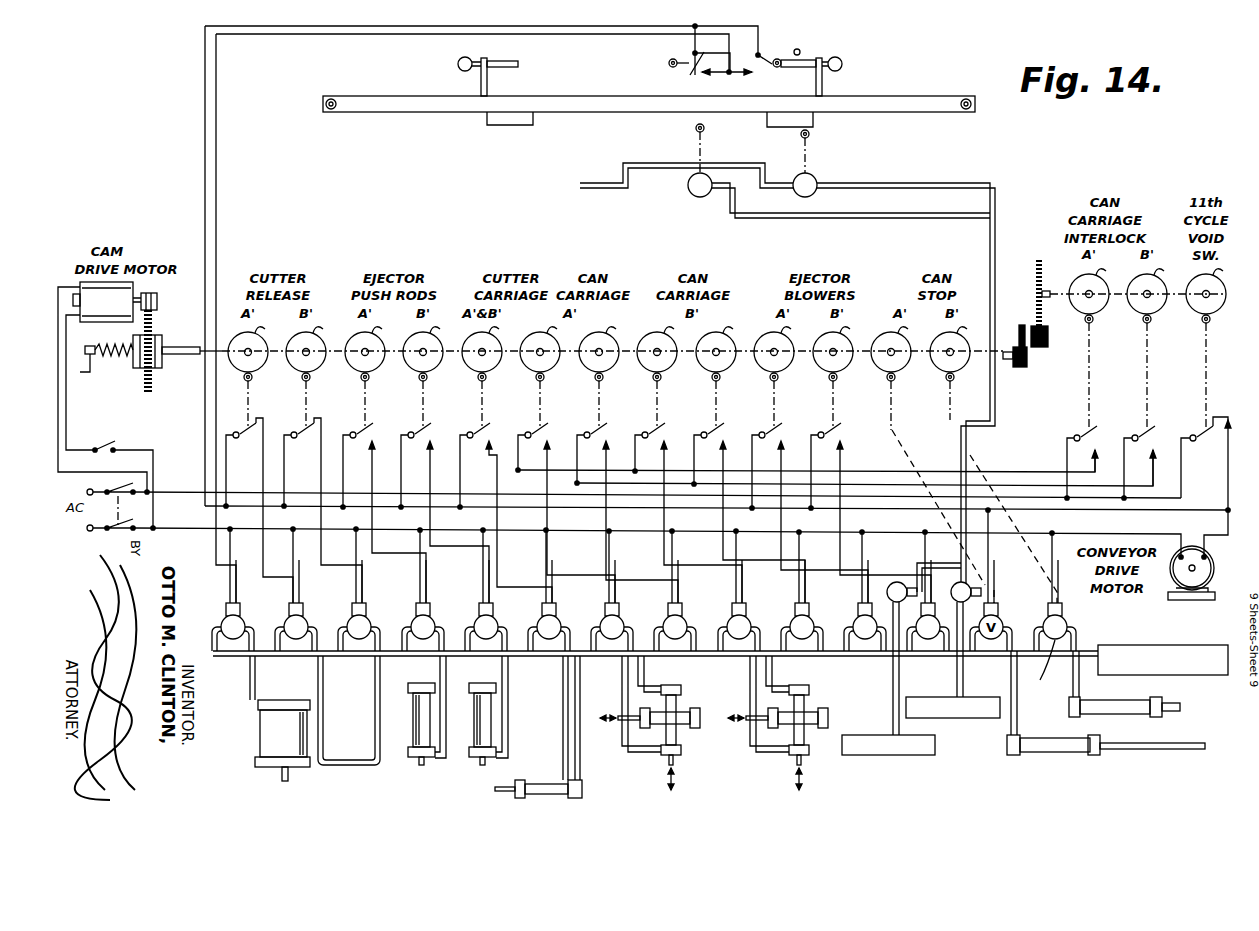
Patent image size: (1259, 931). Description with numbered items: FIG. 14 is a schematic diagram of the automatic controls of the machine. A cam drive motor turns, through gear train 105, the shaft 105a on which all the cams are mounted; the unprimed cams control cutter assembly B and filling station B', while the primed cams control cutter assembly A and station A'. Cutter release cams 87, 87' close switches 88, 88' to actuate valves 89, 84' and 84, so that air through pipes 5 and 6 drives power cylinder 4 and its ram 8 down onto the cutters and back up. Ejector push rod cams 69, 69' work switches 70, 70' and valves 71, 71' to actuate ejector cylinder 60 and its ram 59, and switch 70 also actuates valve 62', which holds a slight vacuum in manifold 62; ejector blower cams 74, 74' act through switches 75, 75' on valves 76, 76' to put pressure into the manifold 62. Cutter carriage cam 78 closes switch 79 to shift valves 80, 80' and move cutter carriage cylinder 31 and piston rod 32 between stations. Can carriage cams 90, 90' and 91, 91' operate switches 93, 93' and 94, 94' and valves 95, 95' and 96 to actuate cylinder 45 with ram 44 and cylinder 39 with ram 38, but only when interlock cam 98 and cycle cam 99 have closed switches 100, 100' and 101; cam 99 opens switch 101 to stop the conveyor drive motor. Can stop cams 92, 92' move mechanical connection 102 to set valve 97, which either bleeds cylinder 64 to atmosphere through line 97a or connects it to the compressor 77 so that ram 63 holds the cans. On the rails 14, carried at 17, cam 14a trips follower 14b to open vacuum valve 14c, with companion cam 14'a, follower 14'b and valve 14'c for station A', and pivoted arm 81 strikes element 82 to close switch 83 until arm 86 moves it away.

The power cylinder 4 is at (257, 730).
The pipe 5 is at (256, 681).
The pipe 6 is at (312, 770).
The ram 8 is at (282, 778).
The rail 14 is at (649, 88).
The cam 14a is at (813, 122).
The bracket 14'a is at (510, 134).
The cam follower 14b is at (800, 137).
The pivot 14'b is at (668, 149).
The valve 14c is at (810, 177).
The valve 14'c is at (689, 203).
The pivot 17 is at (968, 99).
The cutter carriage cylinder 31 is at (552, 772).
The piston rod 32 is at (495, 789).
The ram 38 is at (785, 707).
The cylinder 39 is at (828, 742).
The ram 44 is at (825, 775).
The cylinder 45 is at (768, 781).
The ram 59 is at (460, 792).
The power cylinder 60 is at (466, 700).
The manifold 62 is at (923, 697).
The valve 62' is at (952, 572).
The ram 63 is at (1120, 749).
The cylinder 64 is at (1050, 752).
The ejector push rod cam 69 is at (428, 377).
The cam 69' is at (372, 377).
The switch 70 is at (444, 509).
The switch 70' is at (383, 509).
The valve 71 is at (476, 589).
The valve 71' is at (433, 589).
The cam 74 is at (838, 377).
The cam 74' is at (781, 377).
The switch 75 is at (870, 512).
The switch 75' is at (809, 509).
The valve 76 is at (928, 613).
The valve 76' is at (864, 613).
The compressor 77 is at (1130, 645).
The cutter carriage cam 78 is at (488, 379).
The switch 79 is at (491, 426).
The valve 80 is at (557, 589).
The solenoid valve 80' is at (623, 590).
The pivoted arm 81 is at (816, 68).
The switch actuating element 82 is at (774, 67).
The switch 83 is at (762, 55).
The valve 84 is at (242, 589).
The valve 84' is at (307, 589).
The arm 86 is at (799, 50).
The cam 87 is at (311, 377).
The cam 87' is at (255, 377).
The switch 88 is at (322, 510).
The switch 88' is at (258, 510).
The valve 89 is at (366, 606).
The can carriage cam 90 is at (604, 377).
The cam 90' is at (547, 377).
The can carriage cam 91 is at (721, 377).
The cam 91' is at (664, 377).
The cam 92 is at (955, 373).
The cam 92' is at (898, 378).
The switch 93 is at (626, 509).
The switch 93' is at (565, 509).
The switch 94 is at (748, 509).
The switch 94' is at (687, 509).
The valve 95 is at (747, 590).
The valve 95' is at (685, 590).
The valve 96 is at (809, 606).
The valve 97 is at (1068, 614).
The line 97a is at (1045, 669).
The interlock cam 98 is at (1128, 338).
The cycle cam 99 is at (1195, 323).
The switch 100 is at (1148, 445).
The switch 100' is at (1092, 445).
The switch 101 is at (1200, 445).
The mechanical connection 102 is at (995, 452).
The gear train 105 is at (1020, 285).
The shaft 105a is at (180, 358).